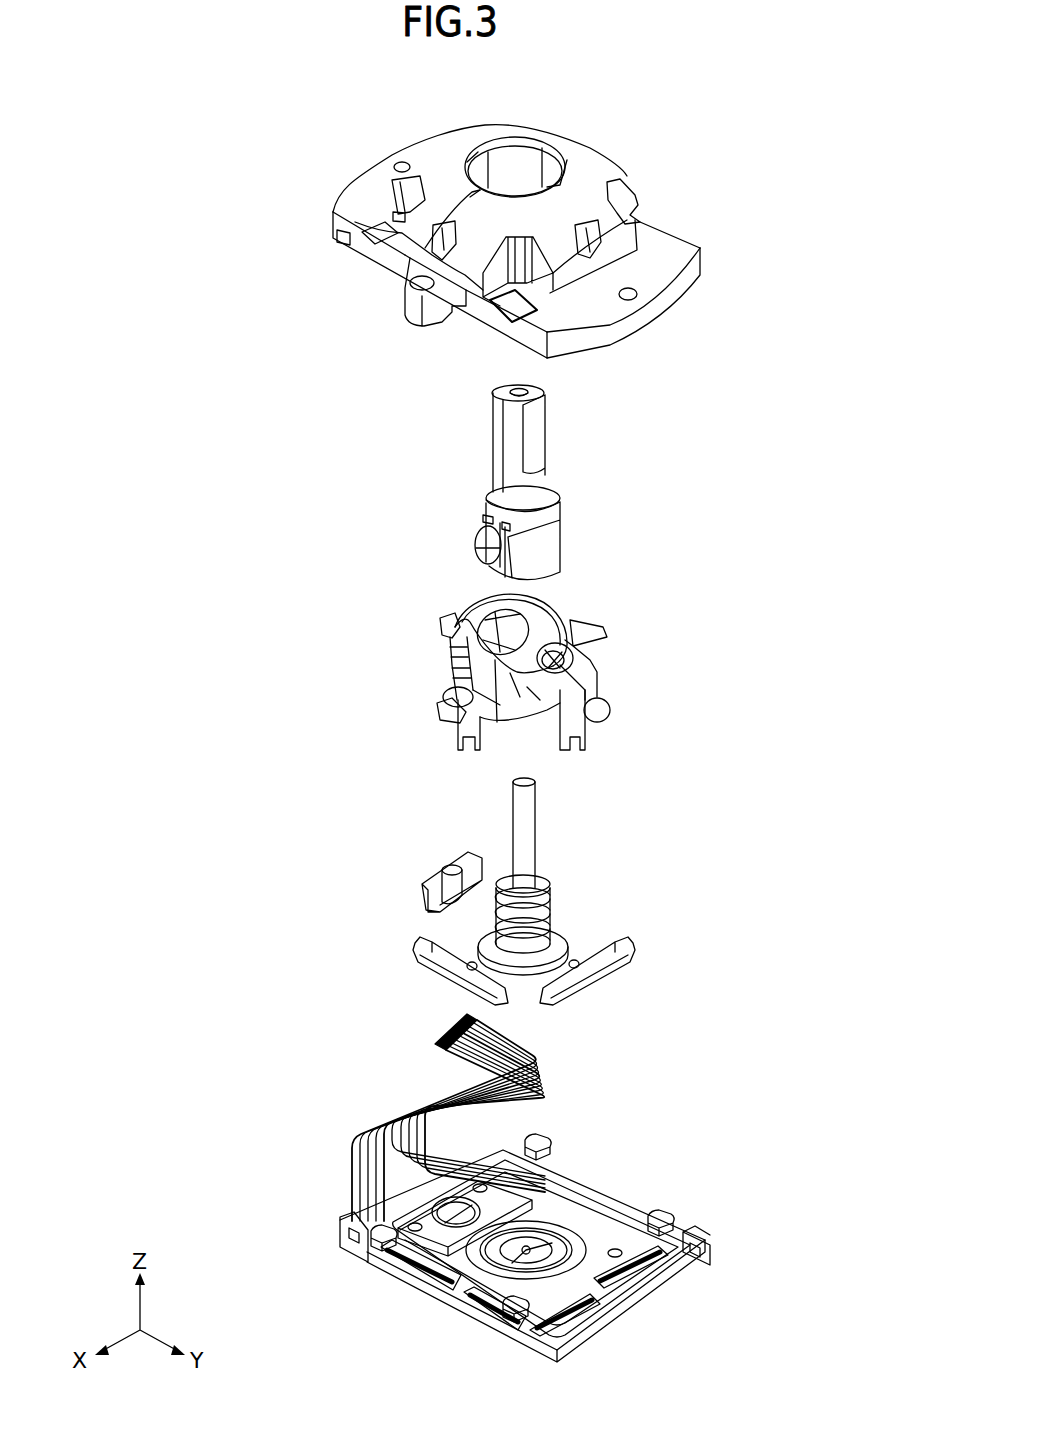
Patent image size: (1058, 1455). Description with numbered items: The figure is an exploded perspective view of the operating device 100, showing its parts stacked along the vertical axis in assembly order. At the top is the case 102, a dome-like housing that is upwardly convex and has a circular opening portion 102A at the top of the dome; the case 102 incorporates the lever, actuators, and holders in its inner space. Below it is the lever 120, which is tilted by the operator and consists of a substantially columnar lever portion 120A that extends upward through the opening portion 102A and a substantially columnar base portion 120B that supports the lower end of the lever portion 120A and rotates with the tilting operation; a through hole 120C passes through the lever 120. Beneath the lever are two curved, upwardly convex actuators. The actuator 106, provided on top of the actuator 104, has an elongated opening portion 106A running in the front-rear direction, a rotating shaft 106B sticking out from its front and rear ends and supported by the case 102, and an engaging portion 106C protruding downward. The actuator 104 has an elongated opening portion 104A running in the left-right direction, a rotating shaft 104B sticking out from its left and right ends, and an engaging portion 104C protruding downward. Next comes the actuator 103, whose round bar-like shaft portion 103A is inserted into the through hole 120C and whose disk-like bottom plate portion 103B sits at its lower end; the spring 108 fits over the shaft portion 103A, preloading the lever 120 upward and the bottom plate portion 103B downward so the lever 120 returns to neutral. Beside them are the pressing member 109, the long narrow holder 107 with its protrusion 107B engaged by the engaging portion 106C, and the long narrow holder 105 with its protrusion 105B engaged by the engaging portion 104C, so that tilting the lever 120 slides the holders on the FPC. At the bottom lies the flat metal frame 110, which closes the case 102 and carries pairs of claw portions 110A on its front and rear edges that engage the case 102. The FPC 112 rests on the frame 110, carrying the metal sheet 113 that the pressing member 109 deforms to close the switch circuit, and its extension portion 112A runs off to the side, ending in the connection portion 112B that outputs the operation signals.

The operating device 100 is at (828, 96).
The case 102 is at (680, 240).
The opening portion 102A is at (519, 158).
The lever 120 is at (571, 467).
The lever portion 120A is at (537, 418).
The base portion 120B is at (547, 553).
The through hole 120C is at (507, 385).
The actuator 104 is at (592, 679).
The opening portion 104A is at (577, 651).
The rotating shaft 104B is at (448, 622).
The engaging portion 104C is at (587, 735).
The actuator 106 is at (473, 653).
The opening portion 106A is at (556, 603).
The rotating shaft 106B is at (445, 690).
The engaging portion 106C is at (458, 732).
The actuator 103 is at (498, 800).
The shaft portion 103A is at (527, 812).
The bottom plate portion 103B is at (557, 933).
The spring 108 is at (547, 877).
The pressing member 109 is at (457, 867).
The holder 107 is at (420, 950).
The protrusion 107B is at (473, 963).
The holder 105 is at (637, 947).
The protrusion 105B is at (577, 963).
The frame 110 is at (708, 1248).
The claw portions 110A is at (547, 1140).
The FPC 112 is at (665, 1278).
The extension portion 112A is at (540, 1067).
The connection portion 112B is at (430, 1052).
The metal sheet 113 is at (440, 1203).